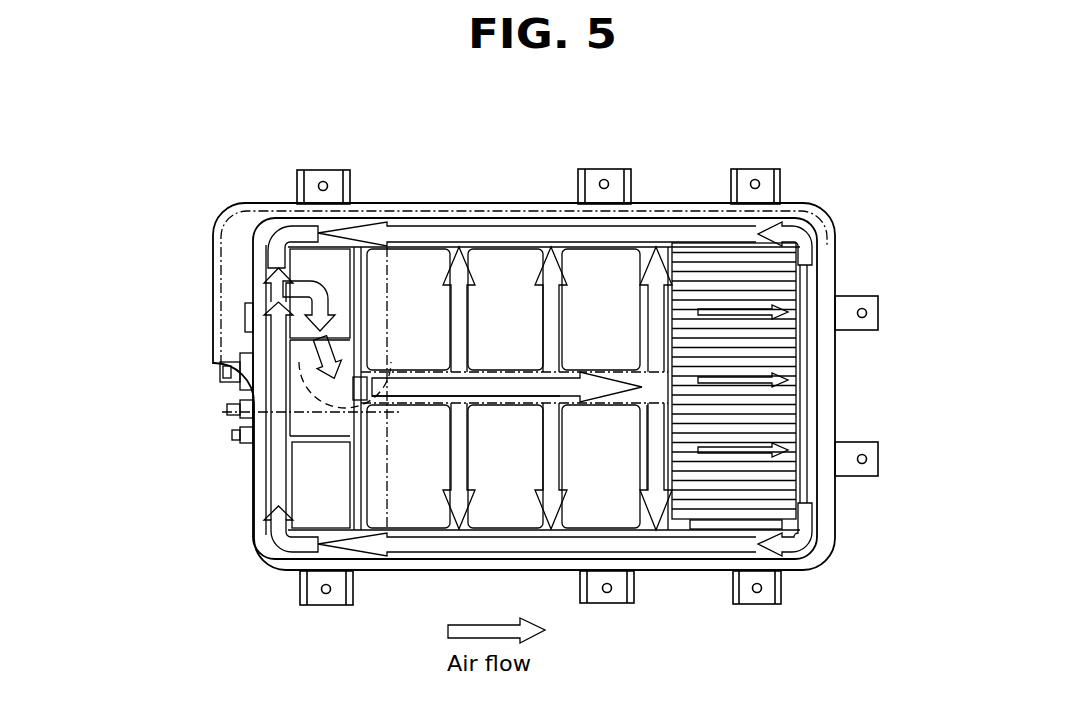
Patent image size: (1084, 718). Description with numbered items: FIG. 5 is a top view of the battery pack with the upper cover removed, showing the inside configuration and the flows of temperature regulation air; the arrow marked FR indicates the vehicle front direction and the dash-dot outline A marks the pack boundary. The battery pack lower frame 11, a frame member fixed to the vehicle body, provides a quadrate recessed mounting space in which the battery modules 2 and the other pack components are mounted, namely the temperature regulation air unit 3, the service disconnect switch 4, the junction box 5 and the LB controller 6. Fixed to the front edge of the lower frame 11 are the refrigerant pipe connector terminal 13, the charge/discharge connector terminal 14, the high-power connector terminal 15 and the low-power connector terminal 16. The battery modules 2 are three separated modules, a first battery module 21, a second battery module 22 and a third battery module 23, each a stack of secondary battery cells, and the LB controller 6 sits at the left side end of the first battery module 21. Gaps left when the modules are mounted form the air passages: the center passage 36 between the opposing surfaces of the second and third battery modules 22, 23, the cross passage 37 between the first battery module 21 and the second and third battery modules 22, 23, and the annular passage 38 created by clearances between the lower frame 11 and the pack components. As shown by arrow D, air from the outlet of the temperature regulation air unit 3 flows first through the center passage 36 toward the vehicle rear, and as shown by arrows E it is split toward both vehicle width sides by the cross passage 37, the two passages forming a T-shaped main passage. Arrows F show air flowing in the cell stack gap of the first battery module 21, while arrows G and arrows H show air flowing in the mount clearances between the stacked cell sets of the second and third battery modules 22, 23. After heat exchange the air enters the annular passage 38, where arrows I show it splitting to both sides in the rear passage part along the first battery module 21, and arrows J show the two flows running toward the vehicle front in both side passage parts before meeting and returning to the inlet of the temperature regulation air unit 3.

The power conversion device A is at (213, 241).
The battery modules 2 is at (653, 132).
The temperature regulation air unit 3 is at (340, 290).
The service disconnect switch 4 is at (333, 418).
The junction box 5 is at (319, 488).
The lithium-ion battery controller 6 is at (707, 529).
The battery pack lower frame 11 is at (667, 205).
The refrigerant pipe connector terminal 13 is at (245, 318).
The charge/discharge connector terminal 14 is at (222, 372).
The high-power connector terminal 15 is at (228, 410).
The low-power connector terminal 16 is at (232, 436).
The first battery module 21 is at (698, 292).
The second battery module 22 is at (495, 287).
The third battery module 23 is at (506, 432).
The center passage 36 is at (555, 396).
The cross passage 37 is at (647, 448).
The annular passage 38 is at (805, 371).
The arrow D is at (483, 376).
The arrows E is at (647, 312).
The arrows F is at (748, 388).
The arrows G is at (558, 293).
The arrows H is at (450, 330).
The arrows I is at (803, 228).
The arrows J is at (460, 226).
The front direction FR is at (487, 142).